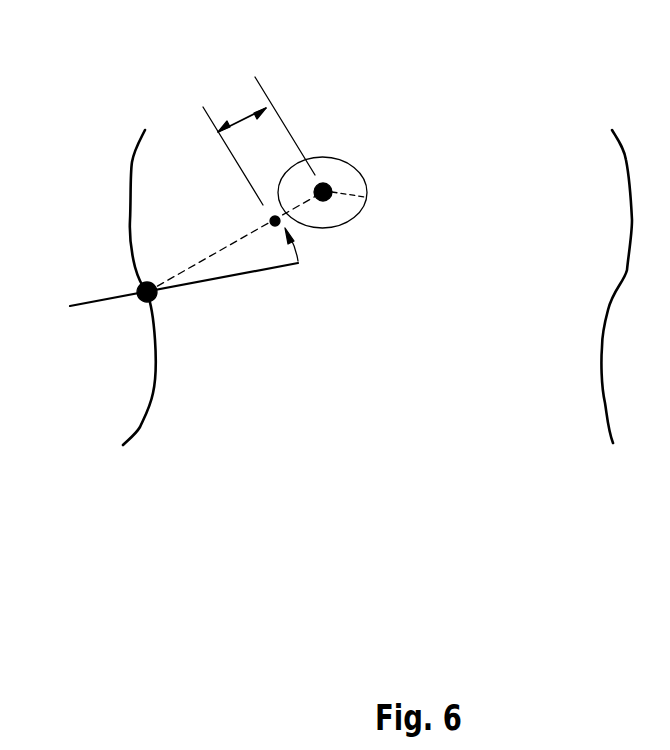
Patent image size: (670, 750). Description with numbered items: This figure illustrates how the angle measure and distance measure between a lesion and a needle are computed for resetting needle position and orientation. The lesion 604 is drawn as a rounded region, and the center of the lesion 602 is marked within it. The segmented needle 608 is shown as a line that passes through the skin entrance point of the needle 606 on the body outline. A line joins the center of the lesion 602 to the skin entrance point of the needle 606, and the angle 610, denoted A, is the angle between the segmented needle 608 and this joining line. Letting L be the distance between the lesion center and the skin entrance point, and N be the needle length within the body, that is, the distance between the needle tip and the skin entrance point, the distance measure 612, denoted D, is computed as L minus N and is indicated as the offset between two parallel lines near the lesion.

The center of the lesion 602 is at (366, 198).
The lesion 604 is at (333, 158).
The skin entrance point of the needle 606 is at (133, 282).
The segmented needle 608 is at (243, 275).
The angle 610 is at (298, 250).
The distance measure 612 is at (238, 107).